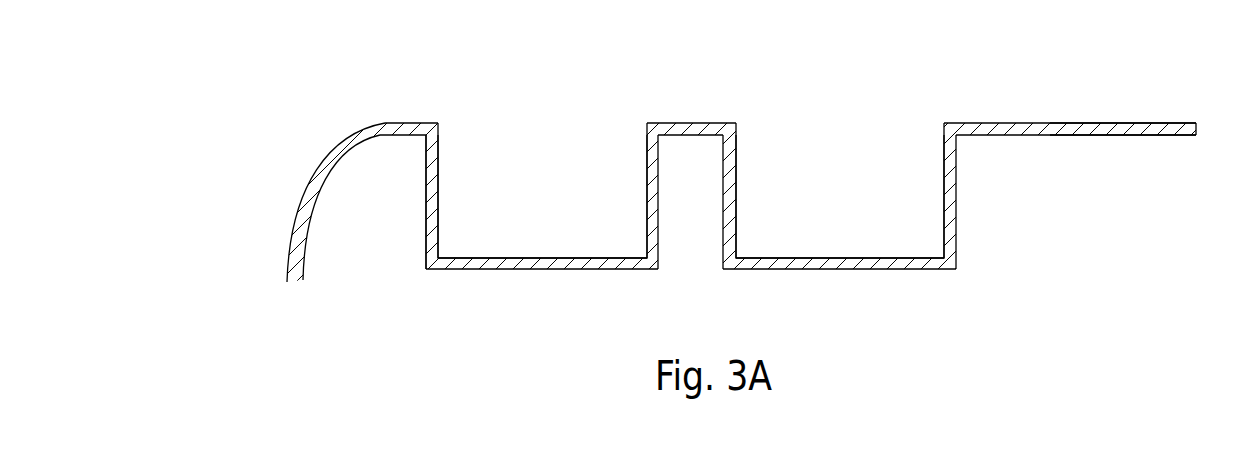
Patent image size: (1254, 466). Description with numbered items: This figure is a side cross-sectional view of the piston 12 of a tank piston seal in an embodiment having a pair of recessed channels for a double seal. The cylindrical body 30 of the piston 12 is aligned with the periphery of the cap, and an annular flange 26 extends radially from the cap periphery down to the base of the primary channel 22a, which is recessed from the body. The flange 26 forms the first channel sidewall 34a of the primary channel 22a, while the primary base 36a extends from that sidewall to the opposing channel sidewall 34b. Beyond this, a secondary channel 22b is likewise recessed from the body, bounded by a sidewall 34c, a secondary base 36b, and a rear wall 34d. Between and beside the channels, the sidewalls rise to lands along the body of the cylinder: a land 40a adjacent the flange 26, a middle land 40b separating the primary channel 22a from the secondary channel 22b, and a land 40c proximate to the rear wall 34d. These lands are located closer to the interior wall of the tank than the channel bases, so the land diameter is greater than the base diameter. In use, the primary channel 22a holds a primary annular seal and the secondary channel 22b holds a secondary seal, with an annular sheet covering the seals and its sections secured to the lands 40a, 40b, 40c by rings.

The piston 12 is at (253, 143).
The annular flange 26 is at (428, 207).
The land 40a is at (405, 123).
The middle land 40b is at (690, 123).
The land 40c is at (980, 123).
The primary channel 22a is at (543, 210).
The secondary channel 22b is at (828, 208).
The first channel sidewall 34a is at (438, 190).
The channel sidewall 34b is at (647, 190).
The channel sidewall 34c is at (735, 192).
The rear wall 34d is at (943, 205).
The primary base 36a is at (535, 258).
The secondary base 36b is at (845, 258).
The cylindrical body 30 is at (1113, 135).